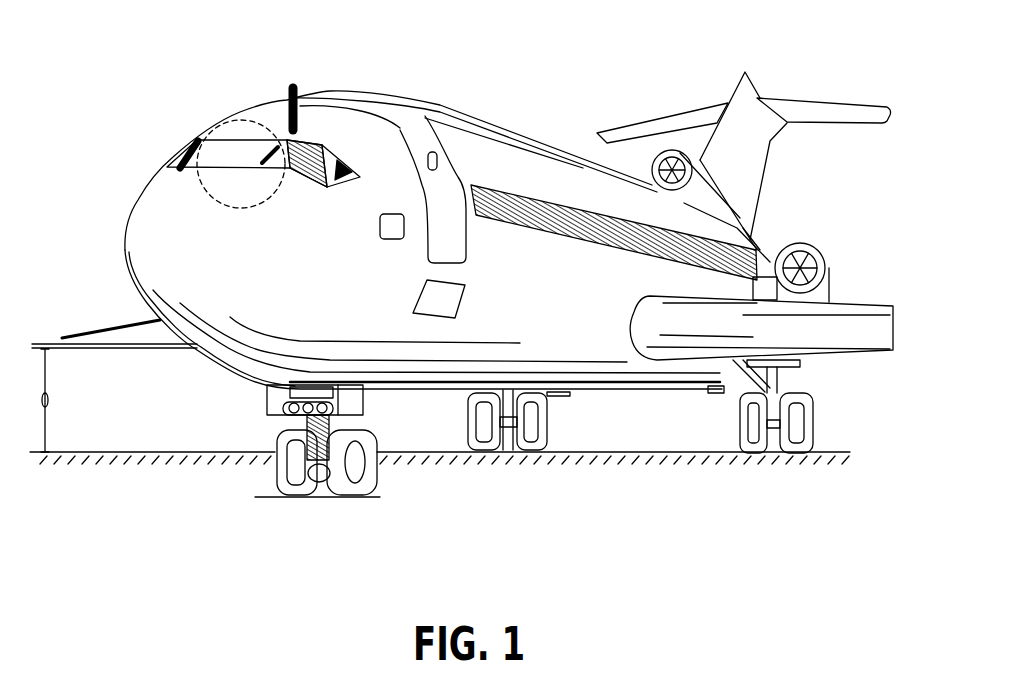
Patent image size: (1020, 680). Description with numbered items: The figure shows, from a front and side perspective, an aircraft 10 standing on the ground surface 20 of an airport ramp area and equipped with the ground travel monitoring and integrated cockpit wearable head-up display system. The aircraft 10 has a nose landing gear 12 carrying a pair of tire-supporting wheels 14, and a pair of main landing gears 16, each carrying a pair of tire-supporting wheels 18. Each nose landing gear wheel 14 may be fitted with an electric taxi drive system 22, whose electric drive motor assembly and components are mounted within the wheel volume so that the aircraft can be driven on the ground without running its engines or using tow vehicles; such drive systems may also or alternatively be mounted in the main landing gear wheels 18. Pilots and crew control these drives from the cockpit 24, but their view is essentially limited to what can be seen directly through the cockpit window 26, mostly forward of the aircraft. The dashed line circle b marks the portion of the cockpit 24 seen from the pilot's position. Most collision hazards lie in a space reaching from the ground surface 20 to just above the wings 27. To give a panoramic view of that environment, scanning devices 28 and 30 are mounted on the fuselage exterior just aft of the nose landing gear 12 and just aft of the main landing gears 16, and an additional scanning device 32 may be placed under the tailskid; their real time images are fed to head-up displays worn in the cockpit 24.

The aircraft 10 is at (467, 105).
The nose landing gear 12 is at (232, 478).
The nose landing gear wheels 14 is at (298, 503).
The main landing gears 16 is at (466, 408).
The main landing gear wheels 18 is at (530, 460).
The ground surface 20 is at (652, 454).
The electric taxi drive system 22 is at (275, 472).
The cockpit 24 is at (297, 86).
The cockpit window 26 is at (197, 141).
The wings 27 is at (107, 338).
The scanning device 28 is at (377, 382).
The scanning device 30 is at (557, 396).
The scanning device 32 is at (720, 392).
The dashed line circle b is at (240, 122).